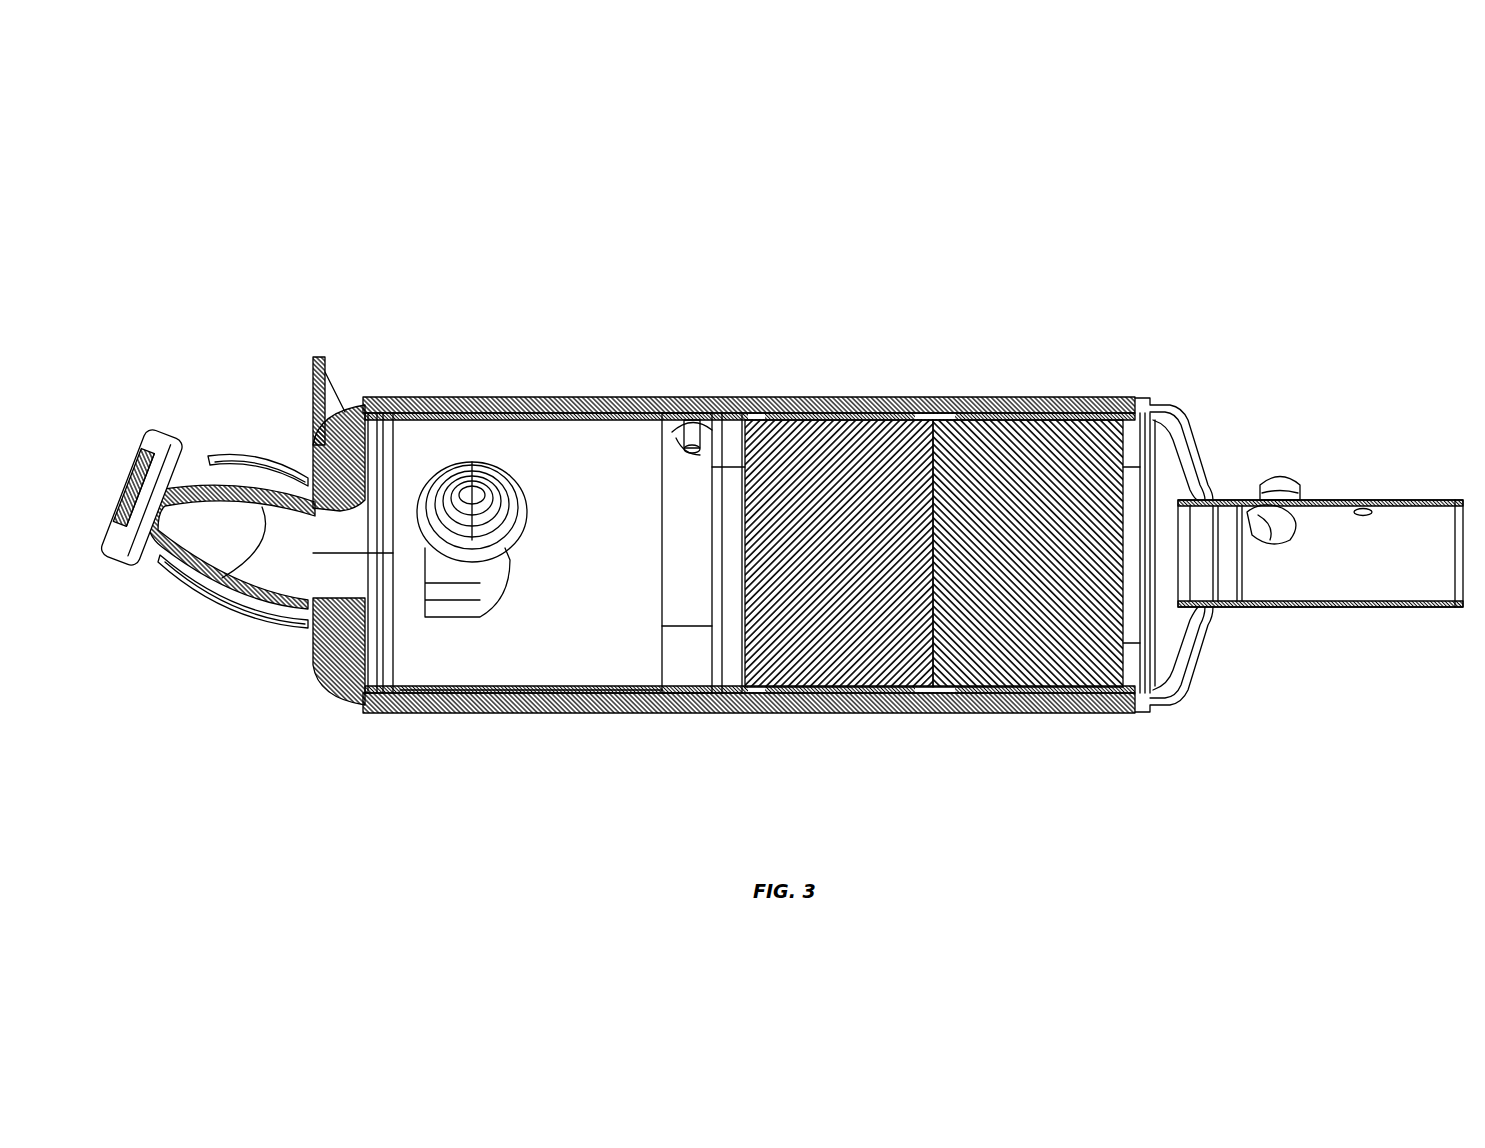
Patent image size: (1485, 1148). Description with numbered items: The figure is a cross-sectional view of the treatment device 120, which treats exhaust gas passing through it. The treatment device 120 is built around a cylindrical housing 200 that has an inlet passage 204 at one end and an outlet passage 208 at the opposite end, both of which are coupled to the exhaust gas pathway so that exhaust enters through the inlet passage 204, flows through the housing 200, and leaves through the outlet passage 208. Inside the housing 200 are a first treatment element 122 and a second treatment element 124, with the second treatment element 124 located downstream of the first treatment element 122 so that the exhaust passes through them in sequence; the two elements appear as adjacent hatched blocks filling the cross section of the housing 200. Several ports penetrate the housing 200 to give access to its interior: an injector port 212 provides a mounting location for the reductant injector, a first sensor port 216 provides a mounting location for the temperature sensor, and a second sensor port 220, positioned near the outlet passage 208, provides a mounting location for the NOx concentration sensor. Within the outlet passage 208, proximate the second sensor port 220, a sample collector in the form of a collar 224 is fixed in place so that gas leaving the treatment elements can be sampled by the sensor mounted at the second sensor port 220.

The treatment device 120 is at (617, 228).
The cylindrical housing 200 is at (855, 397).
The inlet passage 204 is at (138, 445).
The injector port 212 is at (462, 490).
The first sensor port 216 is at (683, 433).
The first treatment element 122 is at (825, 628).
The second treatment element 124 is at (1035, 630).
The outlet passage 208 is at (1420, 607).
The second sensor port 220 is at (1282, 480).
The collar 224 is at (1262, 598).